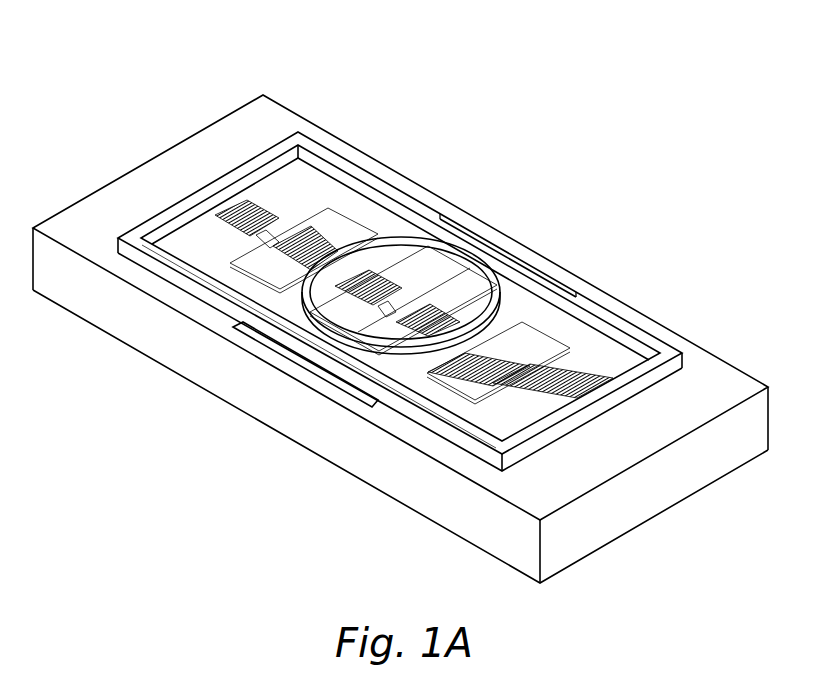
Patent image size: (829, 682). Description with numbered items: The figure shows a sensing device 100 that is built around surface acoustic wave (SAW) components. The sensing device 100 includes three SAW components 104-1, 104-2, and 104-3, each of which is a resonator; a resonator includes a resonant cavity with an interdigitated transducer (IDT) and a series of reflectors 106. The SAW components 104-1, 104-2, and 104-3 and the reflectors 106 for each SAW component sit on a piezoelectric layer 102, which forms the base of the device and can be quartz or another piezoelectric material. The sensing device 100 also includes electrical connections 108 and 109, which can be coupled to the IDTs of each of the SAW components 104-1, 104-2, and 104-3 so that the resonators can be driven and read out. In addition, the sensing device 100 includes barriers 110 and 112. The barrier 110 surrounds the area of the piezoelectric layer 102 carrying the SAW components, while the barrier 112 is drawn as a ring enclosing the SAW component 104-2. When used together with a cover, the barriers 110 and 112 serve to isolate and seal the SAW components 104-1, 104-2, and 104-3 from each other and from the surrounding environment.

The sensing device 100 is at (178, 73).
The piezoelectric layer 102 is at (612, 508).
The SAW component 104-1 is at (516, 386).
The SAW component 104-2 is at (410, 303).
The SAW component 104-3 is at (266, 241).
The reflectors 106 is at (323, 242).
The electrical connection 108 is at (531, 254).
The electrical connection 109 is at (298, 367).
The barrier 110 is at (668, 353).
The barrier 112 is at (493, 265).